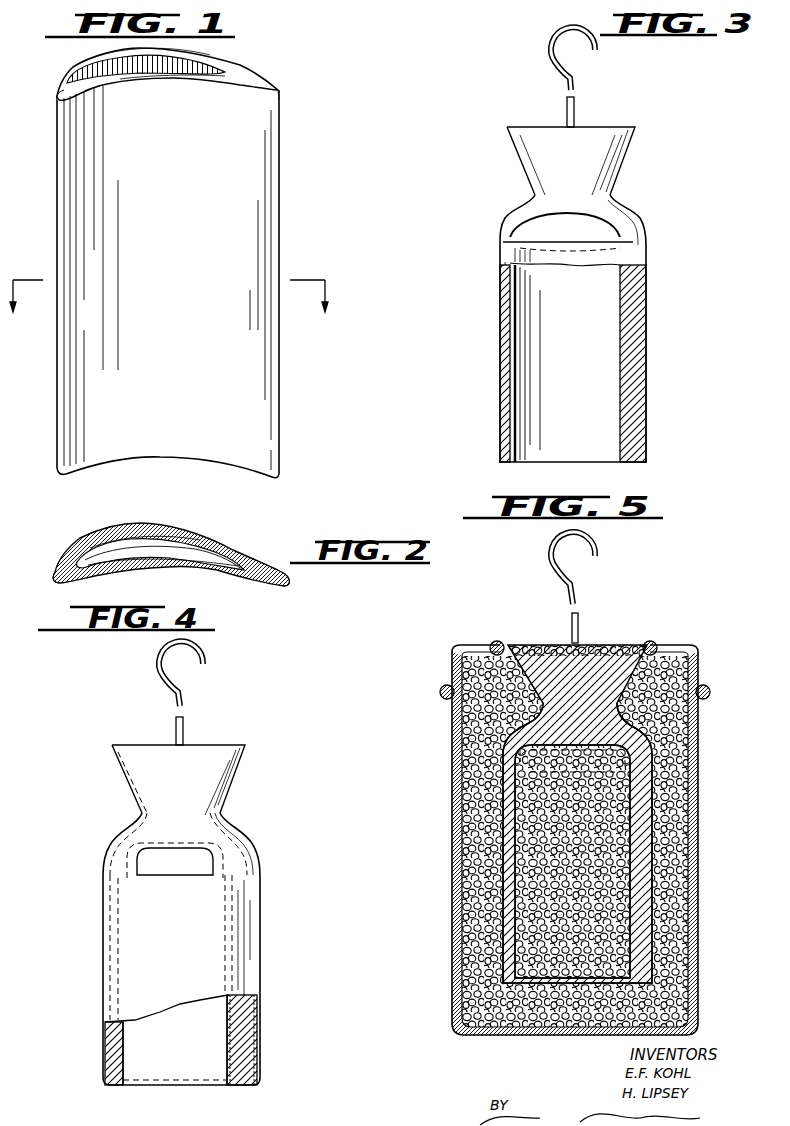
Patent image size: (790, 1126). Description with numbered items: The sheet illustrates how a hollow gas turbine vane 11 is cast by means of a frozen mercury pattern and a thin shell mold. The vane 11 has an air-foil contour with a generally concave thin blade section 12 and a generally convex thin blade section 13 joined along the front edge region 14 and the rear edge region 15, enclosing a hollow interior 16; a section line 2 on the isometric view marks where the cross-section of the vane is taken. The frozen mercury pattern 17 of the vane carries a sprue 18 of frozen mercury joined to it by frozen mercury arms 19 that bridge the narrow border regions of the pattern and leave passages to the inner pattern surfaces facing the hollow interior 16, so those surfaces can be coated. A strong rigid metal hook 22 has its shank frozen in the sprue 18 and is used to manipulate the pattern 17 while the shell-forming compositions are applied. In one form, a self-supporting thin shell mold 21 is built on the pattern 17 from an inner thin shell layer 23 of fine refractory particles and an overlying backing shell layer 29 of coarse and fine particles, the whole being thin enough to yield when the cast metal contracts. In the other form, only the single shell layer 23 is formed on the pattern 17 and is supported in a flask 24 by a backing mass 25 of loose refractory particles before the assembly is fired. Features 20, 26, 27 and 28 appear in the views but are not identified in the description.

In FIG. 1, the section line 2- 2 is at (168, 306).
In FIG. 1, the gas turbine vane 11 is at (67, 66).
In FIG. 2, the gas turbine vane 11 is at (75, 543).
In FIG. 1, the concave thin blade section 12 is at (187, 82).
In FIG. 2, the concave thin blade section 12 is at (152, 575).
In FIG. 1, the convex thin blade section 13 is at (190, 56).
In FIG. 2, the convex thin blade section 13 is at (245, 562).
In FIG. 1, the front edge region 14 is at (62, 92).
In FIG. 2, the front edge region 14 is at (58, 562).
In FIG. 1, the rear edge region 15 is at (281, 92).
In FIG. 2, the rear edge region 15 is at (290, 580).
In FIG. 1, the hollow interior 16 is at (133, 70).
In FIG. 2, the hollow interior 16 is at (215, 548).
In FIG. 3, the hollow interior 16 is at (612, 320).
In FIG. 4, the hollow interior 16 is at (196, 1074).
In FIG. 5, the hollow interior 16 is at (578, 975).
In FIG. 3, the frozen mercury pattern 17 is at (635, 378).
In FIG. 4, the frozen mercury pattern 17 is at (257, 1051).
In FIG. 5, the frozen mercury pattern 17 is at (640, 805).
In FIG. 3, the sprue 18 is at (582, 138).
In FIG. 4, the sprue 18 is at (200, 757).
In FIG. 5, the sprue 18 is at (610, 655).
In FIG. 3, the frozen mercury arms 19 is at (523, 215).
In FIG. 4, the frozen mercury arms 19 is at (122, 850).
In FIG. 3, the dome window 20 is at (603, 232).
In FIG. 4, the dome window 20 is at (190, 866).
In FIG. 5, the dome window 20 is at (500, 752).
In FIG. 3, the thin shell mold 21 is at (567, 108).
In FIG. 4, the thin shell mold 21 is at (140, 951).
In FIG. 3, the hook 22 is at (548, 52).
In FIG. 4, the hook 22 is at (158, 661).
In FIG. 5, the hook 22 is at (556, 556).
In FIG. 4, the inner thin shell layer 23 is at (232, 1020).
In FIG. 5, the inner thin shell layer 23 is at (620, 722).
In FIG. 5, the flask 24 is at (490, 1035).
In FIG. 5, the backing mass 25 is at (672, 856).
In FIG. 5, the cover 26 is at (690, 645).
In FIG. 5, the clip 27 is at (655, 645).
In FIG. 5, the clip 28 is at (710, 693).
In FIG. 4, the backing shell layer 29 is at (258, 999).